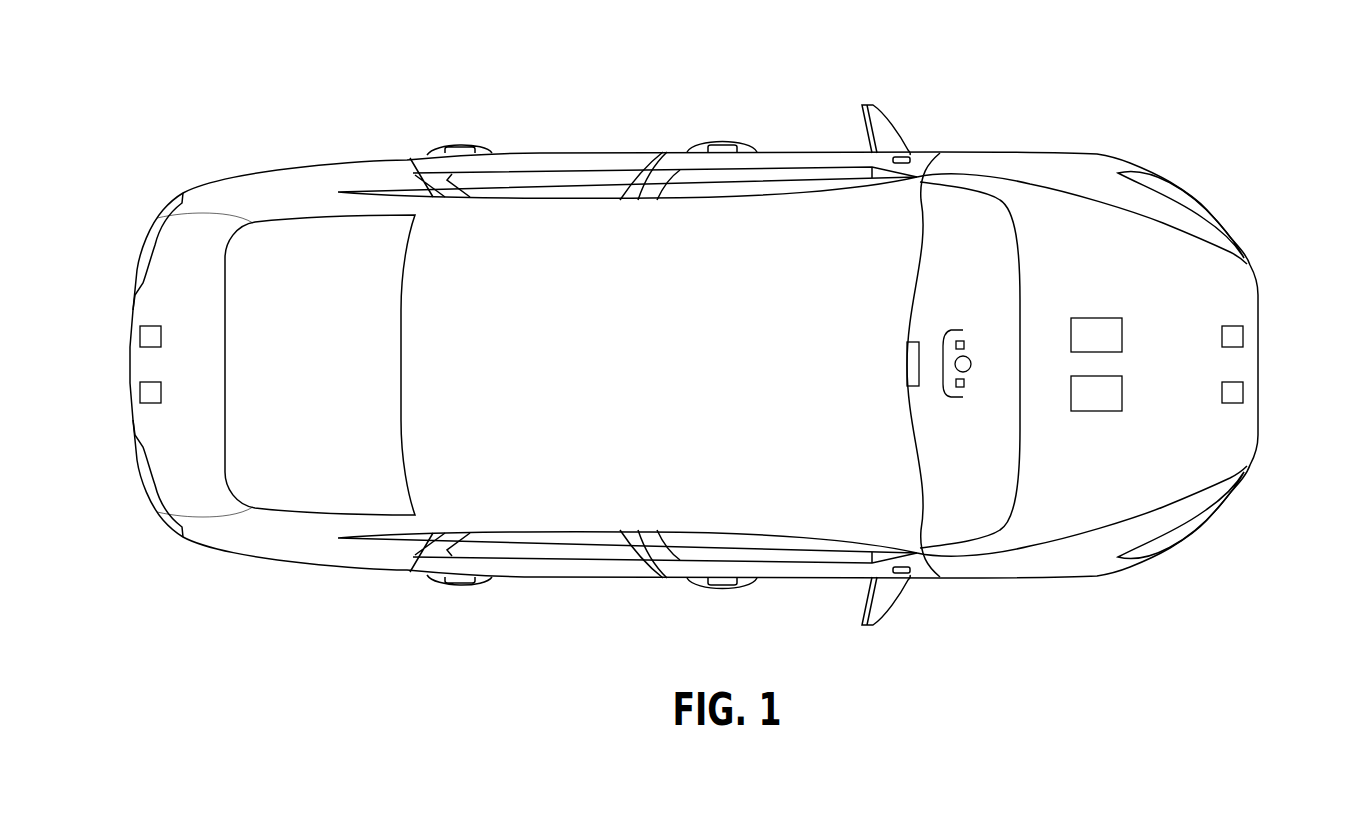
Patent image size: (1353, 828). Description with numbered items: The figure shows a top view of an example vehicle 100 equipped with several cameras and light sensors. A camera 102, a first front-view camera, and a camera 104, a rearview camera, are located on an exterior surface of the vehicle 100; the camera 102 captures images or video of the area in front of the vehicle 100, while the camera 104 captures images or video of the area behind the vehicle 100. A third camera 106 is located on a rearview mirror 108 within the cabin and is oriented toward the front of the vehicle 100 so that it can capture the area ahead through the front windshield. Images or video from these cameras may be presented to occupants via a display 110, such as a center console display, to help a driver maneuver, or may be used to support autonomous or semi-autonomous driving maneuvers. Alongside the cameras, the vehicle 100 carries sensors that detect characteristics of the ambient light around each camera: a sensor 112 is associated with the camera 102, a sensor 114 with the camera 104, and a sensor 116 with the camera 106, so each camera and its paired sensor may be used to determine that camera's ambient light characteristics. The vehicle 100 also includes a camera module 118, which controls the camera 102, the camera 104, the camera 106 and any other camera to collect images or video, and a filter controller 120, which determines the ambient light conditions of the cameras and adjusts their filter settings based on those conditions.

The vehicle 100 is at (1147, 74).
The camera 102 is at (1243, 337).
The camera 104 is at (140, 337).
The camera 106 is at (964, 345).
The rearview mirror 108 is at (943, 385).
The display 110 is at (907, 364).
The sensor 112 is at (1243, 393).
The sensor 114 is at (140, 391).
The sensor 116 is at (964, 385).
The camera module 118 is at (1096, 335).
The filter controller 120 is at (1096, 393).